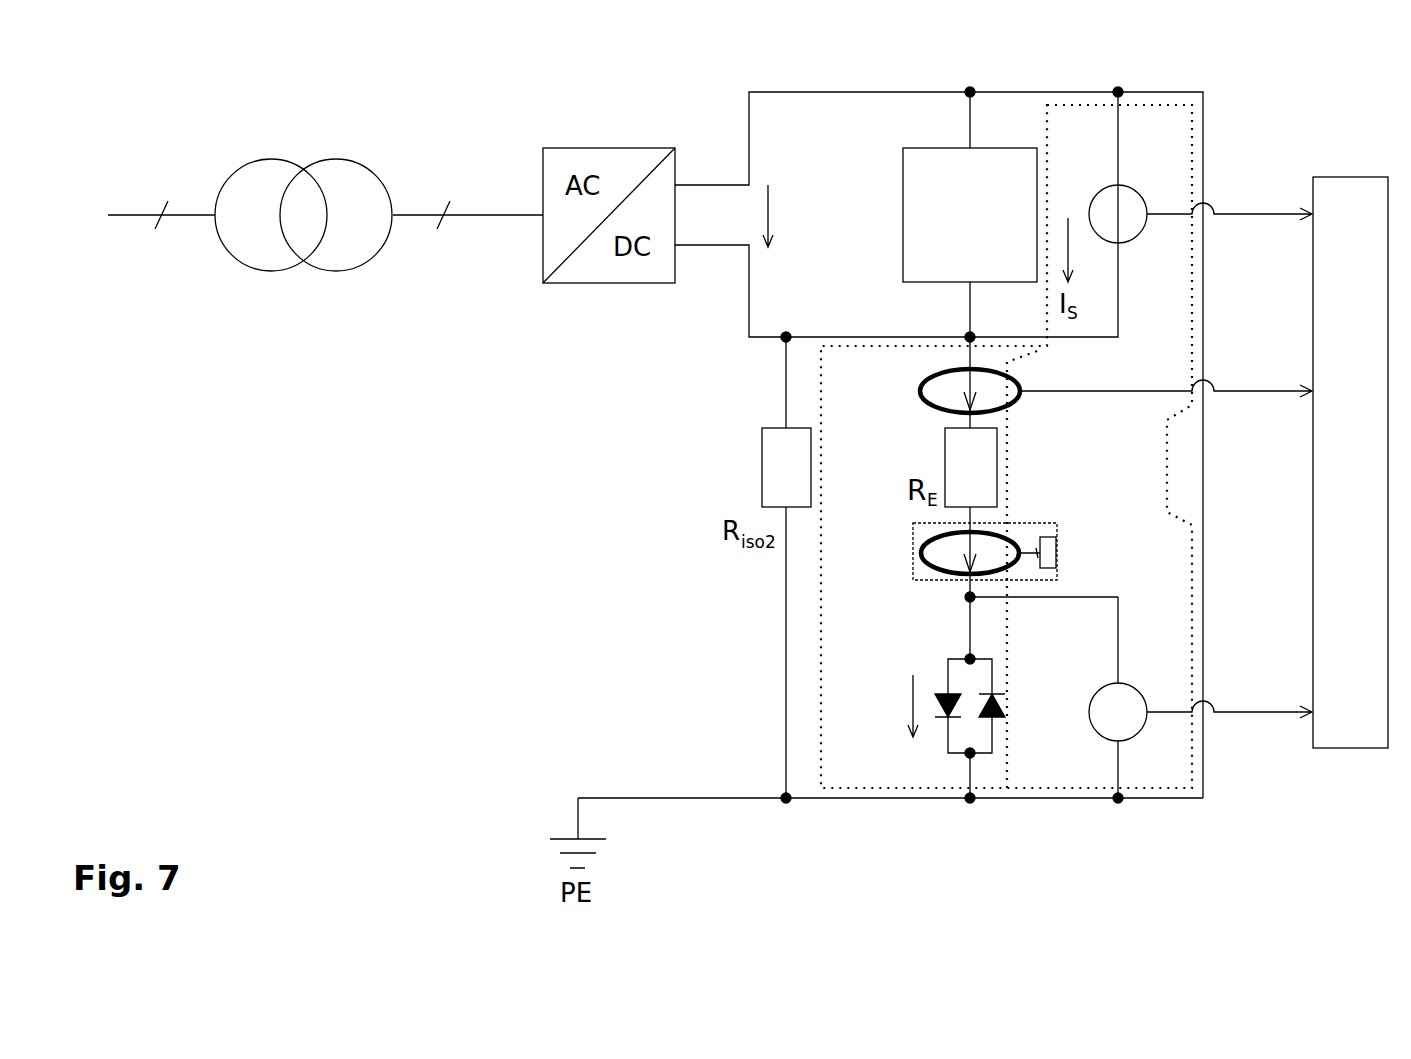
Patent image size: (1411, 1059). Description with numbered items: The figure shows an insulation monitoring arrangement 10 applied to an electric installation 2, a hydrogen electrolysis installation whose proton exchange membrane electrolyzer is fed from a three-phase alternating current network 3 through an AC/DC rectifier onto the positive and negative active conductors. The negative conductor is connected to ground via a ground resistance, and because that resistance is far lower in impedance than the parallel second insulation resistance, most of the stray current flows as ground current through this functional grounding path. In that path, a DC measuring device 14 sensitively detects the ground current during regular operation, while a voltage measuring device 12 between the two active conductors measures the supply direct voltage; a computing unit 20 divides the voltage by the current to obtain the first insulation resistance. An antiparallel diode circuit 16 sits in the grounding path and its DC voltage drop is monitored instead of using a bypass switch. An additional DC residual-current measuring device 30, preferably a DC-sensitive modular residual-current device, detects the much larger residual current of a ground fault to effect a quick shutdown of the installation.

The electric installation 2 is at (716, 103).
The three-phase alternating current network 3 is at (337, 181).
The insulation monitoring arrangement 10 is at (1178, 84).
The voltage measuring device 12 is at (1142, 193).
The DC measuring device 14 is at (921, 390).
The antiparallel diode circuit 16 is at (947, 757).
The computing unit 20 is at (1360, 727).
The DC residual-current measuring device 30 is at (1028, 581).